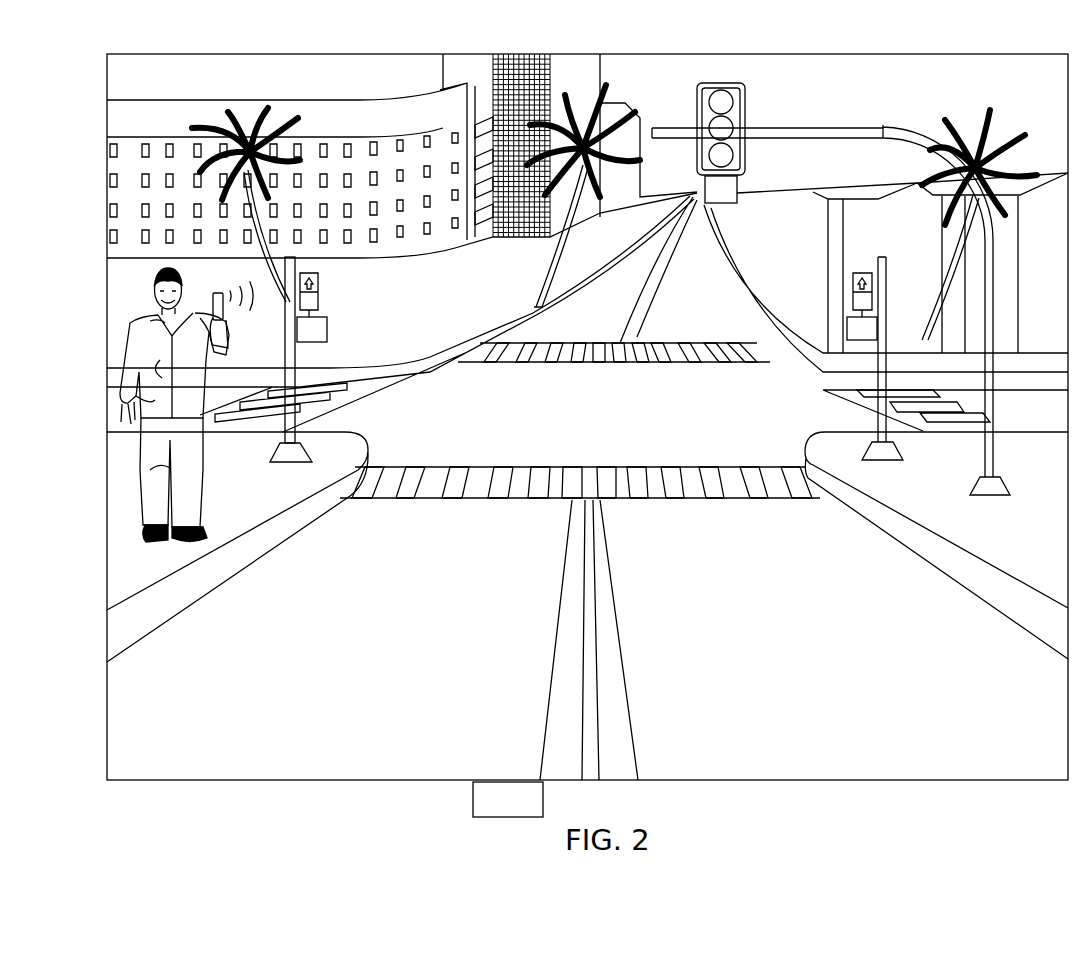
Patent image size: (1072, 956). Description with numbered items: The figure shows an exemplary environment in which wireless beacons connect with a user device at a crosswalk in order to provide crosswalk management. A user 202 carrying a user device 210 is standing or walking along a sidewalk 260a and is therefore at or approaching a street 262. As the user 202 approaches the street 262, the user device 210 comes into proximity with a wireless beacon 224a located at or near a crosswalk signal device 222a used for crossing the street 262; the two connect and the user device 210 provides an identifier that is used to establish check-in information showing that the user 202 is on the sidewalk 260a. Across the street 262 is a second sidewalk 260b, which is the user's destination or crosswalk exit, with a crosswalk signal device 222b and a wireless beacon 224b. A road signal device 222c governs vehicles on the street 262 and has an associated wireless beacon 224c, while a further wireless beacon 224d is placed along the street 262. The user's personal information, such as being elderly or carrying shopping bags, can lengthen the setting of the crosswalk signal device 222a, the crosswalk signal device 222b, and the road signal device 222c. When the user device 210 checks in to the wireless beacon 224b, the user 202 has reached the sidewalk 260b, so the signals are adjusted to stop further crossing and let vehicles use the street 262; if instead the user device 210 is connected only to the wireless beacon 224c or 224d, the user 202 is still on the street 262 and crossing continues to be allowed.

The user 202 is at (153, 286).
The user device 210 is at (223, 307).
The crosswalk signal device 222a is at (318, 284).
The wireless beacon 224a is at (327, 331).
The crosswalk signal device 222b is at (853, 285).
The wireless beacon 224b is at (848, 325).
The road signal device 222c is at (893, 53).
The wireless beacon 224c is at (737, 188).
The wireless beacon 224d is at (473, 800).
The sidewalk 260a is at (255, 497).
The sidewalk 260b is at (947, 517).
The street 262 is at (697, 580).